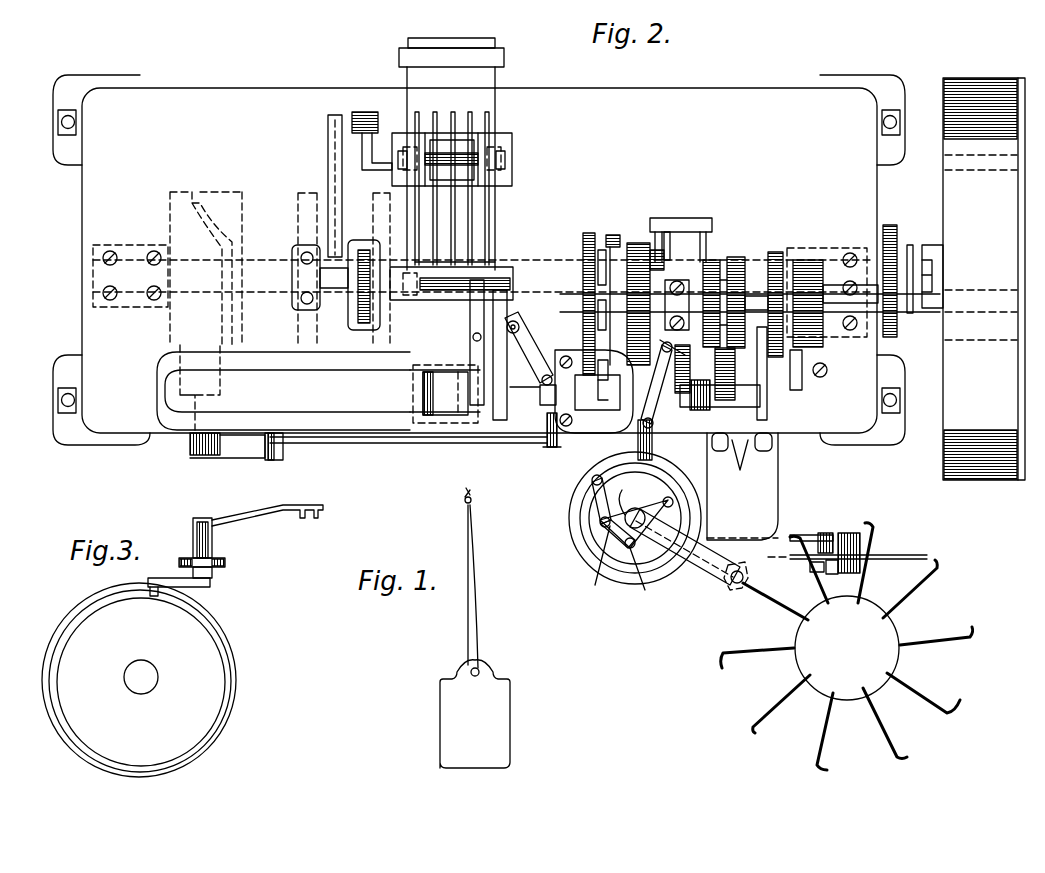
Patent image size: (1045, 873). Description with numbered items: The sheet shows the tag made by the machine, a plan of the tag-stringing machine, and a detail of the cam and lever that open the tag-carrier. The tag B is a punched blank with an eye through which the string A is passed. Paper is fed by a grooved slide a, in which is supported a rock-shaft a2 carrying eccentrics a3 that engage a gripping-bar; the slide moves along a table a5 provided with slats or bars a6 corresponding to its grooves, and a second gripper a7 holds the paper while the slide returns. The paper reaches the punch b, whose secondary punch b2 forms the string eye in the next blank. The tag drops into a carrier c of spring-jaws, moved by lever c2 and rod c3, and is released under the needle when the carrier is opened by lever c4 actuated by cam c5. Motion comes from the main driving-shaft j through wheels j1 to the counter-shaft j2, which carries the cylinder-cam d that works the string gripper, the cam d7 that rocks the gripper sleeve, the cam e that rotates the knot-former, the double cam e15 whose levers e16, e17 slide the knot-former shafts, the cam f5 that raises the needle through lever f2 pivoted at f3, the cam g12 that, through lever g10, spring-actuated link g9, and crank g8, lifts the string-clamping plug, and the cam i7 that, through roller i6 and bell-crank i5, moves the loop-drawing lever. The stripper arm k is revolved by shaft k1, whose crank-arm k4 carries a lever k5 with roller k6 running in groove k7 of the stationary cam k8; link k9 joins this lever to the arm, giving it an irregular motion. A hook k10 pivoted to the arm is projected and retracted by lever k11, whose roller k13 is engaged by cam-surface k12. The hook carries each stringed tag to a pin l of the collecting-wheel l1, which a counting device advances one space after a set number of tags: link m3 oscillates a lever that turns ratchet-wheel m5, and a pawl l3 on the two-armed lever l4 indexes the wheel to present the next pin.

In FIG. 2, the grooved slide a is at (512, 140).
In FIG. 2, the rock-shaft a2 is at (452, 160).
In FIG. 2, the eccentrics a3 is at (410, 150).
In FIG. 2, the table a5 is at (495, 192).
In FIG. 2, the slats or bars a6 is at (433, 235).
In FIG. 2, the second gripper a7 is at (426, 300).
In FIG. 2, the punch b is at (445, 394).
In FIG. 2, the secondary punch b2 is at (474, 338).
In FIG. 2, the carrier c is at (560, 444).
In FIG. 2, the lever c2 is at (236, 449).
In FIG. 2, the rod c3 is at (344, 444).
In FIG. 2, the lever c4 is at (528, 352).
In FIG. 3, the lever c4 is at (235, 544).
In FIG. 3, the cam c5 is at (139, 680).
In FIG. 2, the cylinder-cam d is at (845, 258).
In FIG. 2, the cam d7 is at (775, 252).
In FIG. 2, the cam e is at (736, 258).
In FIG. 2, the double cam e15 is at (586, 240).
In FIG. 2, the lever e16 is at (597, 318).
In FIG. 2, the lever e17 is at (597, 262).
In FIG. 2, the lever f2 is at (606, 380).
In FIG. 2, the pivot f3 is at (612, 236).
In FIG. 2, the cam f5 is at (636, 244).
In FIG. 2, the bell-crank i5 is at (671, 246).
In FIG. 2, the roller i6 is at (657, 267).
In FIG. 2, the cam i7 is at (652, 232).
In FIG. 2, the crank g8 is at (648, 439).
In FIG. 2, the spring-actuated link g9 is at (655, 410).
In FIG. 2, the lever g10 is at (668, 341).
In FIG. 2, the cam g12 is at (686, 297).
In FIG. 2, the main driving-shaft j is at (893, 242).
In FIG. 2, the wheels j1 is at (895, 318).
In FIG. 2, the counter-shaft j2 is at (755, 298).
In FIG. 2, the arm k is at (700, 518).
In FIG. 2, the shaft k1 is at (638, 508).
In FIG. 2, the crank-arm k4 is at (600, 522).
In FIG. 2, the lever k5 is at (601, 510).
In FIG. 2, the roller k6 is at (592, 482).
In FIG. 2, the groove k7 is at (610, 478).
In FIG. 2, the stationary cam k8 is at (635, 512).
In FIG. 2, the link k9 is at (638, 545).
In FIG. 2, the claw or hook k10 is at (746, 571).
In FIG. 2, the lever k11 is at (685, 500).
In FIG. 2, the cam-surface k12 is at (622, 496).
In FIG. 2, the roller k13 is at (670, 497).
In FIG. 2, the pins l is at (847, 646).
In FIG. 2, the collecting-wheel l1 is at (847, 648).
In FIG. 2, the pawl l3 is at (840, 576).
In FIG. 2, the two-armed lever l4 is at (825, 577).
In FIG. 2, the link m3 is at (812, 536).
In FIG. 2, the ratchet-wheel m5 is at (847, 550).
In FIG. 1, the string A is at (477, 578).
In FIG. 2, the tag B is at (594, 391).
In FIG. 1, the tag B is at (475, 714).